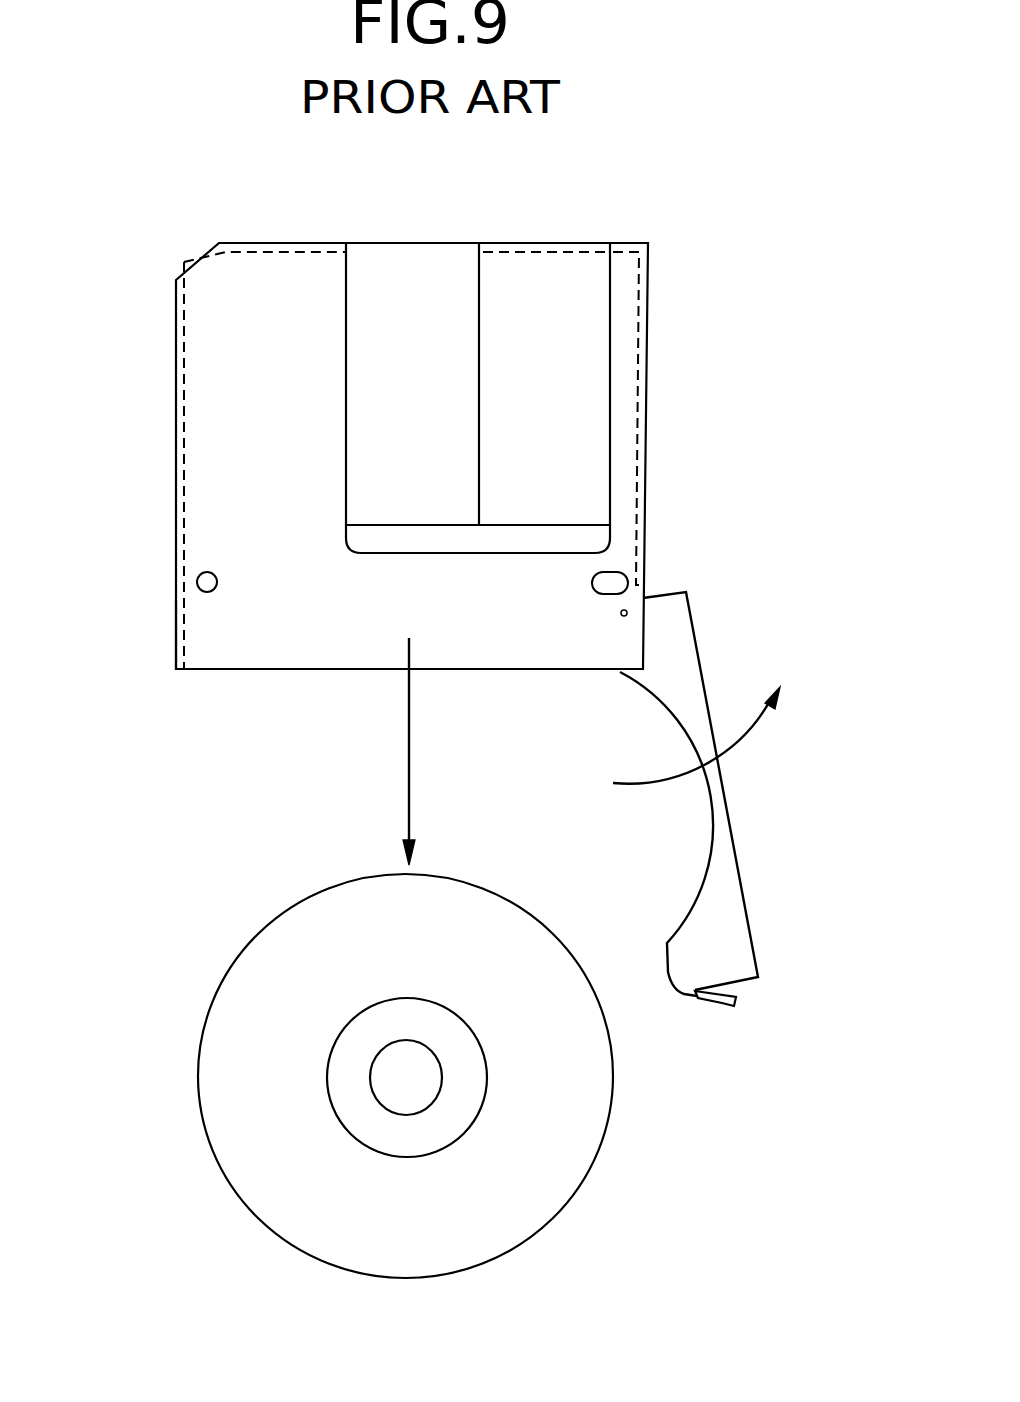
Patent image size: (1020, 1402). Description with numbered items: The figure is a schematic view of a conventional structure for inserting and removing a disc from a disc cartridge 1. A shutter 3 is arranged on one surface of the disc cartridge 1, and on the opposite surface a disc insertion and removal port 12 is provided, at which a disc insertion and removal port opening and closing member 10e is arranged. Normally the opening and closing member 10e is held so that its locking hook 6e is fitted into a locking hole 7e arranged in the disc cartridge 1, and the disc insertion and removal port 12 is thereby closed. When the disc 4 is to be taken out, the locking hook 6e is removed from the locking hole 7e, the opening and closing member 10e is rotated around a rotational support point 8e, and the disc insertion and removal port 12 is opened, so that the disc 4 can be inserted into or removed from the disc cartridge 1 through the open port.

The disc cartridge 1 is at (228, 373).
The shutter 3 is at (415, 275).
The disc 4 is at (248, 1008).
The locking hook 6e is at (718, 1006).
The locking hole 7e is at (176, 630).
The rotational support point 8e is at (627, 613).
The disc insertion and removal port opening and closing member 10e is at (720, 902).
The disc insertion and removal port 12 is at (272, 669).